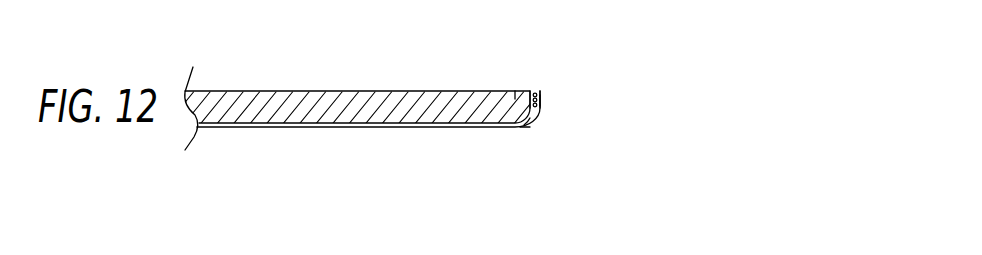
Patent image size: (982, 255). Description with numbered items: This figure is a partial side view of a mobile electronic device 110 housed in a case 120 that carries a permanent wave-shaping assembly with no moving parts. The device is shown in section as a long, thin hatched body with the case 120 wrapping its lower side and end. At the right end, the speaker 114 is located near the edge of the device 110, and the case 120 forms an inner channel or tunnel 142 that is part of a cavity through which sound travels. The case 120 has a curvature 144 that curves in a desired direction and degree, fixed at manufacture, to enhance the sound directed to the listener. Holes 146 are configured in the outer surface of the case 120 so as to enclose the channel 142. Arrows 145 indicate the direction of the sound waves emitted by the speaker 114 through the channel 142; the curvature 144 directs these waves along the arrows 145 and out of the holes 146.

The mobile electronic device 110 is at (314, 112).
The speaker 114 is at (512, 96).
The case 120 is at (393, 148).
The inner channel or tunnel 142 is at (550, 126).
The curvature 144 is at (557, 101).
The arrows 145 is at (536, 142).
The holes 146 is at (537, 78).